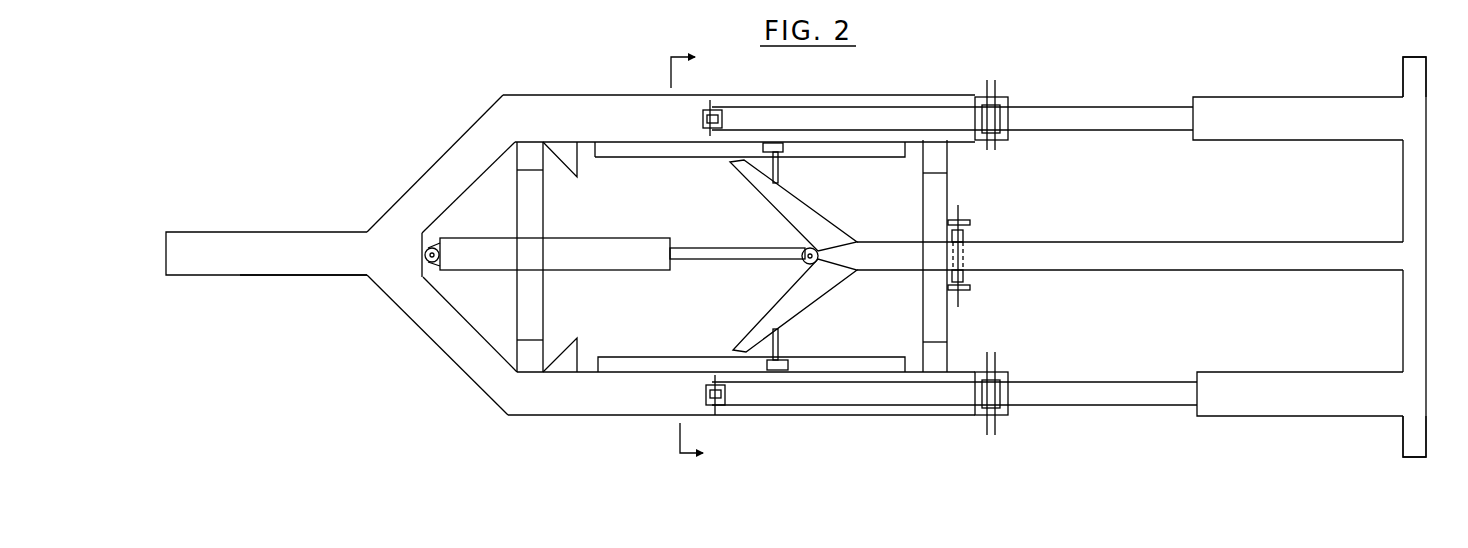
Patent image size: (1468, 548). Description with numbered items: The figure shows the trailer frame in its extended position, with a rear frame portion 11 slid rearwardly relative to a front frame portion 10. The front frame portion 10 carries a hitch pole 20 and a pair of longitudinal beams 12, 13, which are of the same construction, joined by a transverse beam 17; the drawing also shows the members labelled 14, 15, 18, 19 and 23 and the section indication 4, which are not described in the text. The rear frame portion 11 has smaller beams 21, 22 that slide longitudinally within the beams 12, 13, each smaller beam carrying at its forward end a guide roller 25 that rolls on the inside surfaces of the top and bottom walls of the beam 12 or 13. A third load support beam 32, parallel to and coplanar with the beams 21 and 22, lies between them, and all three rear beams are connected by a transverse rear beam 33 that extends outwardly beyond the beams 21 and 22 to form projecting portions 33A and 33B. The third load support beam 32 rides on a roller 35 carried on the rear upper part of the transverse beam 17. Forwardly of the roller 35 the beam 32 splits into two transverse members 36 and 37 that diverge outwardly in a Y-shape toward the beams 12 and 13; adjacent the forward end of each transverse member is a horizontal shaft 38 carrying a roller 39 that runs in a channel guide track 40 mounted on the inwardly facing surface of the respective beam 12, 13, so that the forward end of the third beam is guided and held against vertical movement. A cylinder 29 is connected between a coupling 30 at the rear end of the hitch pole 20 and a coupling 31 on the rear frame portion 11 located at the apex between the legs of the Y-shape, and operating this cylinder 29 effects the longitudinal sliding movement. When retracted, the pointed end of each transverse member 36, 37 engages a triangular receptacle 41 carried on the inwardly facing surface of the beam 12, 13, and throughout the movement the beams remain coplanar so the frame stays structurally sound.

The front frame portion 10 is at (570, 255).
The rear frame portion 11 is at (1120, 92).
The beam 12 is at (553, 92).
The beam 13 is at (550, 418).
The tongue 14 is at (197, 248).
The front cross member 15 is at (517, 318).
The transverse beam 17 is at (948, 340).
The lower angled frame member 18 is at (378, 298).
The upper angled frame member 19 is at (382, 210).
The hitch pole 20 is at (258, 277).
The beam 21 is at (1067, 131).
The beam 22 is at (1110, 412).
The hub 23 is at (1226, 142).
The guide roller 25 is at (706, 394).
The cylinder 29 is at (615, 238).
The coupling 30 is at (440, 243).
The coupling 31 is at (830, 250).
The third load support beam 32 is at (1042, 240).
The transverse rear beam 33 is at (1428, 311).
The projecting portion 33A is at (1402, 78).
The projecting portion 33B is at (1402, 446).
The roller 35 is at (968, 228).
The transverse member 36 is at (757, 208).
The transverse member 37 is at (746, 330).
The horizontal shaft 38 is at (788, 170).
The roller 39 is at (778, 140).
The channel guide track 40 is at (751, 341).
The triangular receptacle 41 is at (558, 170).
The section line 4- 4 is at (673, 257).